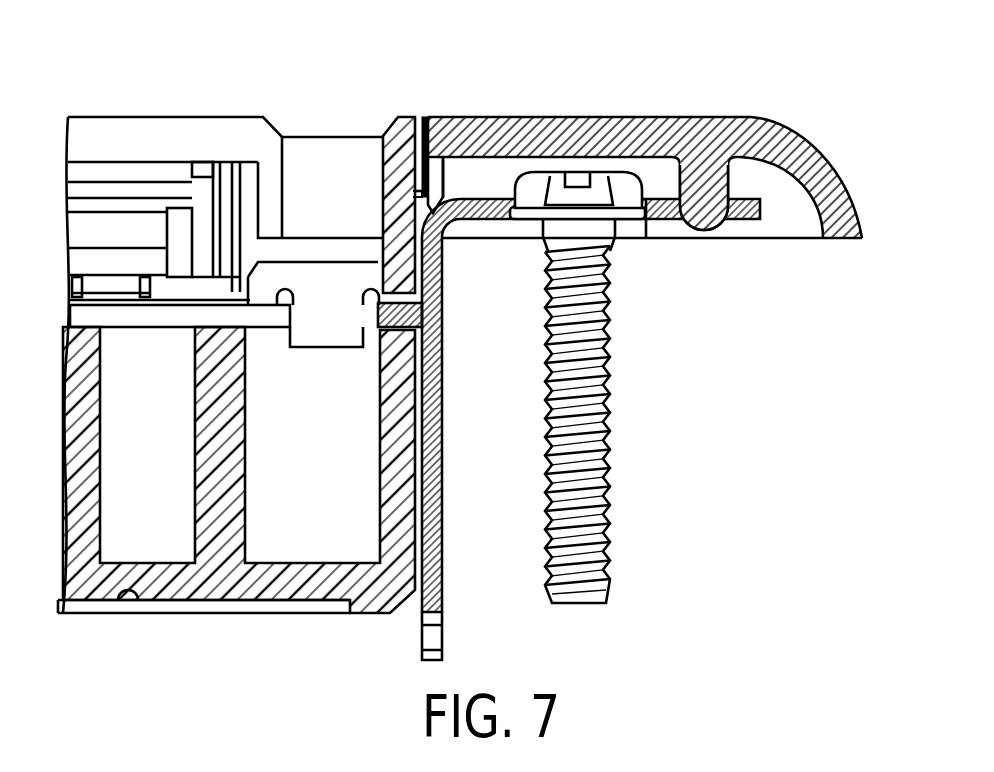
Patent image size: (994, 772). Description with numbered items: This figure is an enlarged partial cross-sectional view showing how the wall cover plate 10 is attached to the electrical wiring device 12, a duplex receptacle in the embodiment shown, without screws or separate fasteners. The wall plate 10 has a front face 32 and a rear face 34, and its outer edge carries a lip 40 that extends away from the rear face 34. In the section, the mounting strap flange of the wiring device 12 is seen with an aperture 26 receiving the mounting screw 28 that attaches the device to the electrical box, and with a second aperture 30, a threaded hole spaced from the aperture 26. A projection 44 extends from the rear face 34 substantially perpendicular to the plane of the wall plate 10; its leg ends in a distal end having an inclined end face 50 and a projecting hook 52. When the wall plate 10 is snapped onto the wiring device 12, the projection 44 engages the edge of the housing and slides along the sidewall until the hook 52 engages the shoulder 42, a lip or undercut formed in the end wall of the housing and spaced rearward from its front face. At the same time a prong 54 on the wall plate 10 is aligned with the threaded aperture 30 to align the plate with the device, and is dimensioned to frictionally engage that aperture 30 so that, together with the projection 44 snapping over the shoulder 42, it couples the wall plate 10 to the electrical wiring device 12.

The wall cover plate 10 is at (707, 86).
The electrical wiring device 12 is at (120, 113).
The aperture 26 is at (648, 222).
The mounting screw 28 is at (612, 444).
The second aperture 30 is at (735, 180).
The front face 32 is at (443, 116).
The rear face 34 is at (497, 162).
The lip 40 is at (853, 182).
The shoulder 42 is at (424, 207).
The projection 44 is at (456, 176).
The inclined end face 50 is at (405, 216).
The hook 52 is at (415, 196).
The prong 54 is at (788, 182).